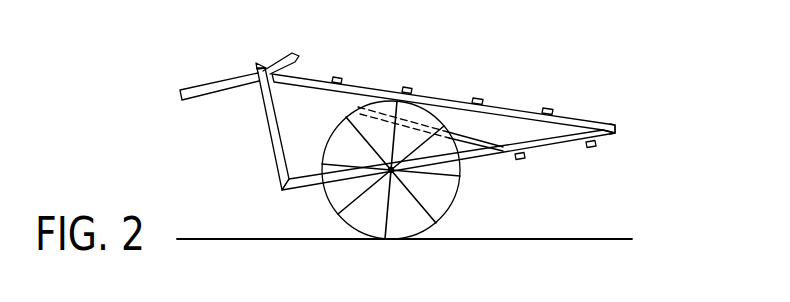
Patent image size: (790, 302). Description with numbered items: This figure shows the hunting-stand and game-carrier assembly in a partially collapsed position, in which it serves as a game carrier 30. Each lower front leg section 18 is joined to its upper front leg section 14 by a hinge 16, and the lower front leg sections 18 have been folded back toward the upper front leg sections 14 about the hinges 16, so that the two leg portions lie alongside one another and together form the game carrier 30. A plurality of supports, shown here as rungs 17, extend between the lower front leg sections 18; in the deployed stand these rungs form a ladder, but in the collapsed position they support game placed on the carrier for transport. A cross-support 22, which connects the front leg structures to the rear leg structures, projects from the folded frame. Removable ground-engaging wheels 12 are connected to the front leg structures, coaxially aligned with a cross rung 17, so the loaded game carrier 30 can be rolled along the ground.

The ground-engaging wheels 12 is at (450, 208).
The upper front leg section 14 is at (557, 150).
The hinge 16 is at (616, 130).
The rungs 17 is at (405, 87).
The lower front leg section 18 is at (363, 87).
The cross-support 22 is at (212, 80).
The game carrier 30 is at (508, 56).